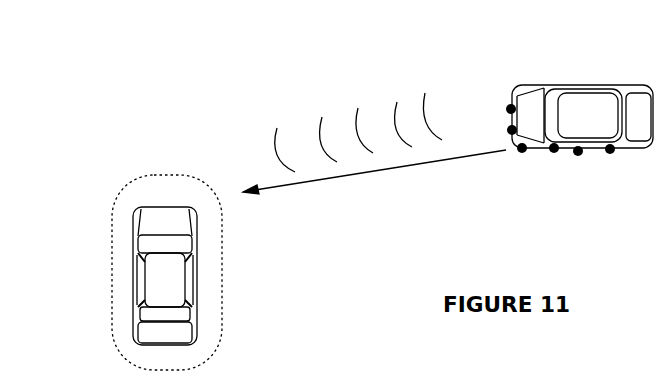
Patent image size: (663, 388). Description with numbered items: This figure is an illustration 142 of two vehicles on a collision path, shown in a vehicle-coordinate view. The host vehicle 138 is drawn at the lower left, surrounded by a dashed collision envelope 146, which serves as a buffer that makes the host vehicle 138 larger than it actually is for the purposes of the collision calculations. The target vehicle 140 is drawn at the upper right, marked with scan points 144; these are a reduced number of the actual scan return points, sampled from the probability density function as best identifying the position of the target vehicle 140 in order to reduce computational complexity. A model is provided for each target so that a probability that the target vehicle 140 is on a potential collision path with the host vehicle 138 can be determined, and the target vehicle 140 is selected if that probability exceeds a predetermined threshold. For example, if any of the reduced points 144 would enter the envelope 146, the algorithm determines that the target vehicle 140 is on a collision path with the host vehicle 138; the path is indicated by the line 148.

The host vehicle 138 is at (137, 255).
The target vehicle 140 is at (590, 85).
The illustration 142 is at (302, 102).
The scan points 144 is at (507, 108).
The collision envelope 146 is at (220, 265).
The line of sight 148 is at (365, 172).